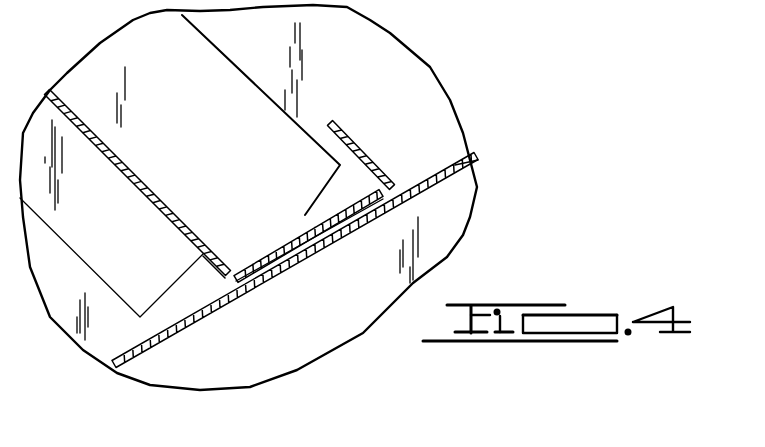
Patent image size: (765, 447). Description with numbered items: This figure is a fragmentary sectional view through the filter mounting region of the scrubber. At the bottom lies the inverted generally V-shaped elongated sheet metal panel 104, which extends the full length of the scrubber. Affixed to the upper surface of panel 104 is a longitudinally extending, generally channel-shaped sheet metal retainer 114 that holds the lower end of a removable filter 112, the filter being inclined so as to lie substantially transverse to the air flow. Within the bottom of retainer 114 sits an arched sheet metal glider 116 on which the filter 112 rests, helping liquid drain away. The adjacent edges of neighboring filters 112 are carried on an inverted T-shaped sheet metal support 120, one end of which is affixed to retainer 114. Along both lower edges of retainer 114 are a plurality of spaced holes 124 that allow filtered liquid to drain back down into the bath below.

The sheet metal panel 104 is at (323, 250).
The removable filter 112 is at (200, 133).
The retainer 114 is at (343, 128).
The glider 116 is at (313, 203).
The inverted T-shaped sheet metal support 120 is at (141, 192).
The spaced holes 124 is at (402, 178).